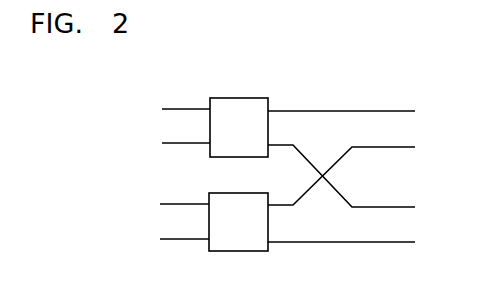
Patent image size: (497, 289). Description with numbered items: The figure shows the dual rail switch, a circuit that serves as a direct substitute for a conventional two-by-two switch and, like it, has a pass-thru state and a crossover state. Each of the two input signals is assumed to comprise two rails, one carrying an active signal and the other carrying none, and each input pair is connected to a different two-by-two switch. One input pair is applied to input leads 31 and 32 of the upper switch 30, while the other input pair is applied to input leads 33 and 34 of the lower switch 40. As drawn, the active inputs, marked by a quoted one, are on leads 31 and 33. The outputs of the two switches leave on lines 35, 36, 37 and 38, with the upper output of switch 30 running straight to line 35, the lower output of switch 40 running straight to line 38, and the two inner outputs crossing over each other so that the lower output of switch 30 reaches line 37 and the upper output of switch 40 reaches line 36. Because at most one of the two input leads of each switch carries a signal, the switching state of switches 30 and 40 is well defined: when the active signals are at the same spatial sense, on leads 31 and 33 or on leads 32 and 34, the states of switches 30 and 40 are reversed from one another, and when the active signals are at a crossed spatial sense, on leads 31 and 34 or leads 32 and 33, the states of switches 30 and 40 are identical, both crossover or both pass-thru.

The 2×2 switch 30 is at (242, 97).
The 2×2 switch 40 is at (230, 193).
The input lead 31 is at (174, 112).
The input lead 32 is at (172, 145).
The input lead 33 is at (171, 207).
The input lead 34 is at (171, 240).
The first output port 35 is at (358, 114).
The second output port 36 is at (358, 171).
The third output port 37 is at (358, 182).
The fourth output port 38 is at (358, 244).